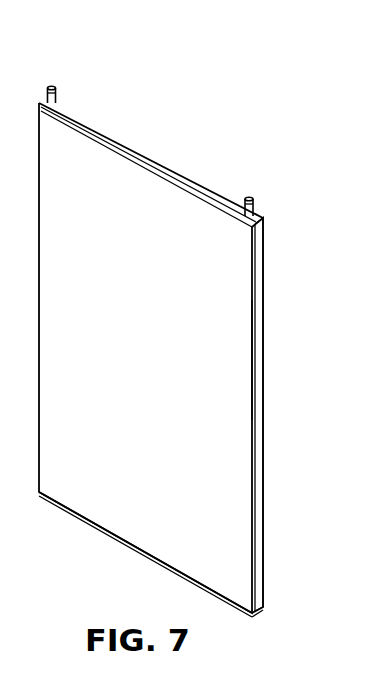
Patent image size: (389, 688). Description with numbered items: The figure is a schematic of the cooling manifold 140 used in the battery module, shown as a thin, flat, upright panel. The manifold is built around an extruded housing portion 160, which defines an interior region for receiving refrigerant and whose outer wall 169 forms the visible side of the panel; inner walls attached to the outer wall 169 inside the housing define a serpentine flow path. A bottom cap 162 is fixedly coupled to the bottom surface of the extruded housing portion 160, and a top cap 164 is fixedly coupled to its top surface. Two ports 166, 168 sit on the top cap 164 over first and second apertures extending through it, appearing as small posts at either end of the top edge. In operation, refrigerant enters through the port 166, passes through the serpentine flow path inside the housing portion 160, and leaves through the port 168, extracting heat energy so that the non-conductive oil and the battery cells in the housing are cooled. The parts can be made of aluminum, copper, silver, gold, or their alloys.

The cooling manifold 140 is at (287, 212).
The extruded housing portion 160 is at (257, 362).
The bottom cap 162 is at (242, 615).
The top cap 164 is at (157, 166).
The port 166 is at (248, 196).
The port 168 is at (50, 85).
The outer wall 169 is at (264, 432).